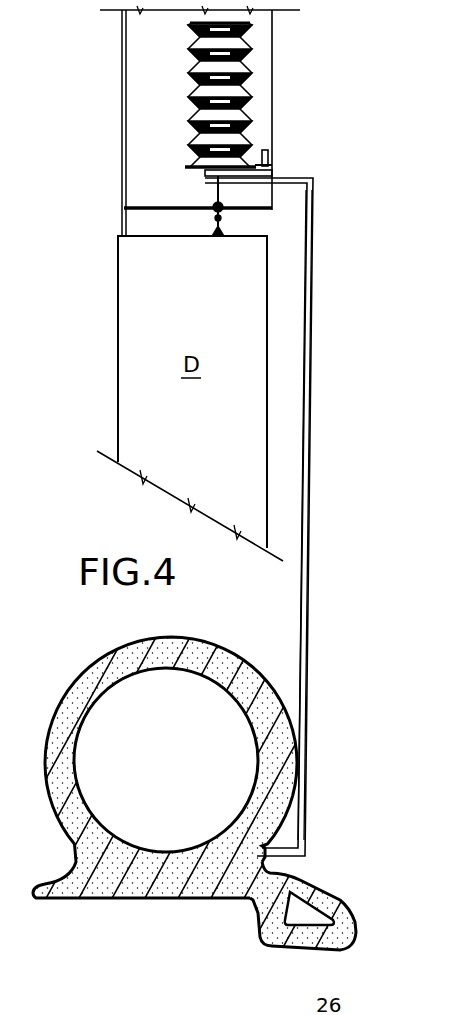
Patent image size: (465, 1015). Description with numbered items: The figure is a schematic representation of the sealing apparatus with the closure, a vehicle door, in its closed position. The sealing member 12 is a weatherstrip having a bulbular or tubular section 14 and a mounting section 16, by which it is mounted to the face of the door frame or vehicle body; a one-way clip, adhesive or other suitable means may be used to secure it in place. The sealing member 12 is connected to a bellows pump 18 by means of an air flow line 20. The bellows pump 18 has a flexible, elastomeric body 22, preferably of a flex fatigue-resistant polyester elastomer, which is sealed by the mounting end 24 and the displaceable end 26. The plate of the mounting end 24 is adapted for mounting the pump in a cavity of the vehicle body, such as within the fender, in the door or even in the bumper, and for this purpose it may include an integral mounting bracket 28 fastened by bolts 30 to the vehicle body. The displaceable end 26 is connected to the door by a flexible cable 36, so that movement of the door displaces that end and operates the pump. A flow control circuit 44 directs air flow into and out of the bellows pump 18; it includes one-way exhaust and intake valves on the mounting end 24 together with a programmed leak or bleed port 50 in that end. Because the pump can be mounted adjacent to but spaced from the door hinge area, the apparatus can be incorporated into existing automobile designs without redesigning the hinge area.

The sealing member 12 is at (232, 787).
The tubular section 14 is at (220, 660).
The mounting section 16 is at (316, 893).
The bellows pump 18 is at (210, 89).
The air flow line 20 is at (312, 352).
The body 22 is at (242, 90).
The mounting end 24 is at (200, 170).
The displaceable end 26 is at (250, 24).
The mounting bracket 28 is at (270, 165).
The bolts 30 is at (263, 157).
The flexible cable 36 is at (225, 229).
The flow control circuit 44 is at (299, 517).
The bleed port 50 is at (230, 178).